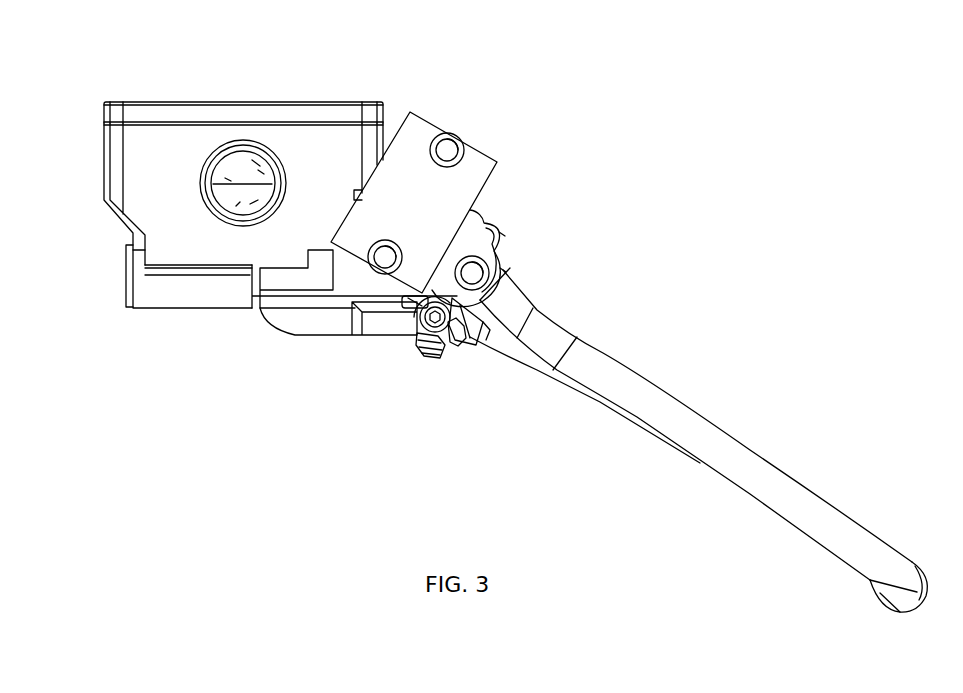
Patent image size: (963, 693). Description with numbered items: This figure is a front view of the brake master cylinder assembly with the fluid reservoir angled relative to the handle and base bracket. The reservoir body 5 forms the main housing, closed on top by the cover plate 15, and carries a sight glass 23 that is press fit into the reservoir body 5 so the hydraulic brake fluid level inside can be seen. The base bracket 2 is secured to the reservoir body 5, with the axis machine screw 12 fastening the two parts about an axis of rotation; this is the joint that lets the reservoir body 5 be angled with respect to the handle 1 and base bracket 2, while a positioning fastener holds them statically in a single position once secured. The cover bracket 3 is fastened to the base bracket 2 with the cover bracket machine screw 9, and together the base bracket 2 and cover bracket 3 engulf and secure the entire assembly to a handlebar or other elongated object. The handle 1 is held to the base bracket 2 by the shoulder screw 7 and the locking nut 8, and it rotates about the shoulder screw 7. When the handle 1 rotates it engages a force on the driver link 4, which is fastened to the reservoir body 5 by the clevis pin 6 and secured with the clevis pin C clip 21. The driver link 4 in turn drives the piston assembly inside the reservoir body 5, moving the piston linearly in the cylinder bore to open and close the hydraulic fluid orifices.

The handle 1 is at (617, 370).
The base bracket 2 is at (498, 229).
The cover bracket 3 is at (410, 112).
The driver link 4 is at (432, 292).
The reservoir body 5 is at (152, 190).
The clevis pin 6 is at (422, 327).
The shoulder screw 7 is at (431, 360).
The locking nut 8 is at (455, 347).
The cover bracket machine screw 9 is at (396, 249).
The axis machine screw 12 is at (500, 266).
The cover plate 15 is at (165, 100).
The clevis pin C clip 21 is at (416, 301).
The sight glass 23 is at (236, 186).